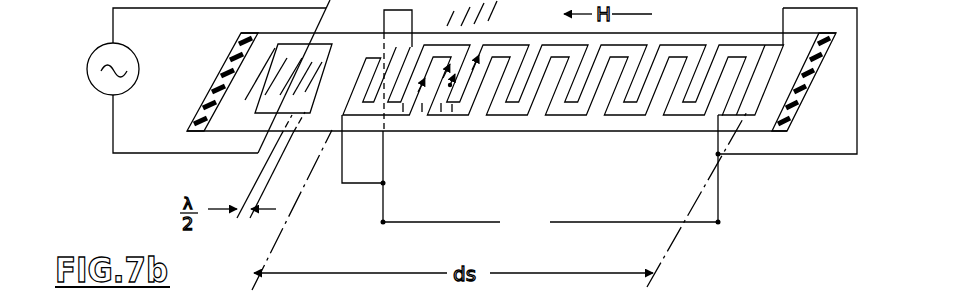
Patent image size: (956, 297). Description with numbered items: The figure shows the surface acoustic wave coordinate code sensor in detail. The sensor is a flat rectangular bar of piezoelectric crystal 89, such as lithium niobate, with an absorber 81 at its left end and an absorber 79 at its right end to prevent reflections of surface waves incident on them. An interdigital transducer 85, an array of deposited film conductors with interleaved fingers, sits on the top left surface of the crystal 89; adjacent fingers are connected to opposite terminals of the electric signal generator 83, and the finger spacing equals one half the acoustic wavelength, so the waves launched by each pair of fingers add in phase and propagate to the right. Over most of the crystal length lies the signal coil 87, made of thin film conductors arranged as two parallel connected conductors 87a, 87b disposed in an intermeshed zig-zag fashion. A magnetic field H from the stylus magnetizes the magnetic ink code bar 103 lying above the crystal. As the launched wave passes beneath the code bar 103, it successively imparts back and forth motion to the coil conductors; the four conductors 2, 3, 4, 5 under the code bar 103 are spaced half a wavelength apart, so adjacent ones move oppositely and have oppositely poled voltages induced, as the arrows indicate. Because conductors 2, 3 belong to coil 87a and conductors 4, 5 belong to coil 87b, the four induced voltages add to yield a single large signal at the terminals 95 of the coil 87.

The absorber 79 is at (800, 97).
The absorber 81 is at (225, 73).
The electric signal generator 83 is at (97, 45).
The interdigital transducer 85 is at (320, 43).
The signal coil 87 is at (543, 124).
The coil conductor 87a is at (343, 174).
The coil conductor 87b is at (383, 160).
The piezoelectric crystal 89 is at (683, 32).
The terminals 95 is at (385, 208).
The code bar 103 is at (463, 65).
The signal coil conductor 2 is at (405, 103).
The signal coil conductor 3 is at (422, 103).
The signal coil conductor 4 is at (441, 103).
The signal coil conductor 5 is at (452, 104).